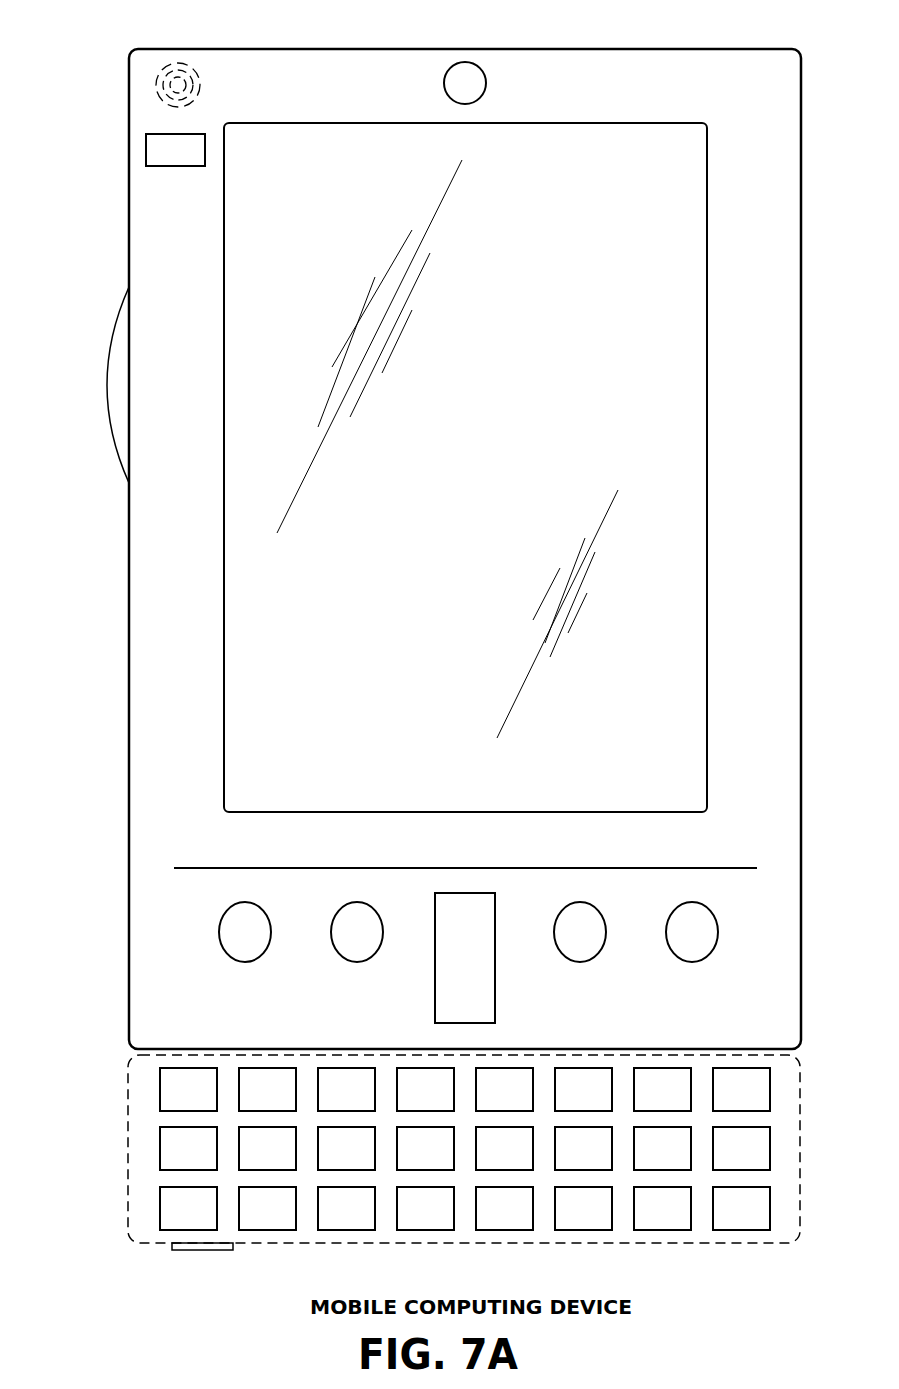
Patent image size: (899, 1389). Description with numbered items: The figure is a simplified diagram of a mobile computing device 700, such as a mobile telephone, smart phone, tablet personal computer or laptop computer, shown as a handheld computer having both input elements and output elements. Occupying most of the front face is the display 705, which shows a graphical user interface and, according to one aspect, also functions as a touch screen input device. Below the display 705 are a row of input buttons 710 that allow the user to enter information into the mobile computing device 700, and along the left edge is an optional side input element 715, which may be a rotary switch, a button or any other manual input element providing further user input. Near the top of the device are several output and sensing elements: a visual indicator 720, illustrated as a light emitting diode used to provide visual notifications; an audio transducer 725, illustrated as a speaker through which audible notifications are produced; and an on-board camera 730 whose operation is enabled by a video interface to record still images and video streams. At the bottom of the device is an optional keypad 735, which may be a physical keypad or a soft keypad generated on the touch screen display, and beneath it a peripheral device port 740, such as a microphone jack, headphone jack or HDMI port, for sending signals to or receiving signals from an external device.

The mobile computing device 700 is at (765, 47).
The display 705 is at (245, 646).
The input buttons 710 is at (244, 961).
The side input element 715 is at (108, 385).
The visual indicator 720 is at (146, 150).
The audio transducer 725 is at (148, 88).
The on-board camera 730 is at (465, 62).
The keypad 735 is at (140, 1148).
The peripheral device port 740 is at (180, 1251).